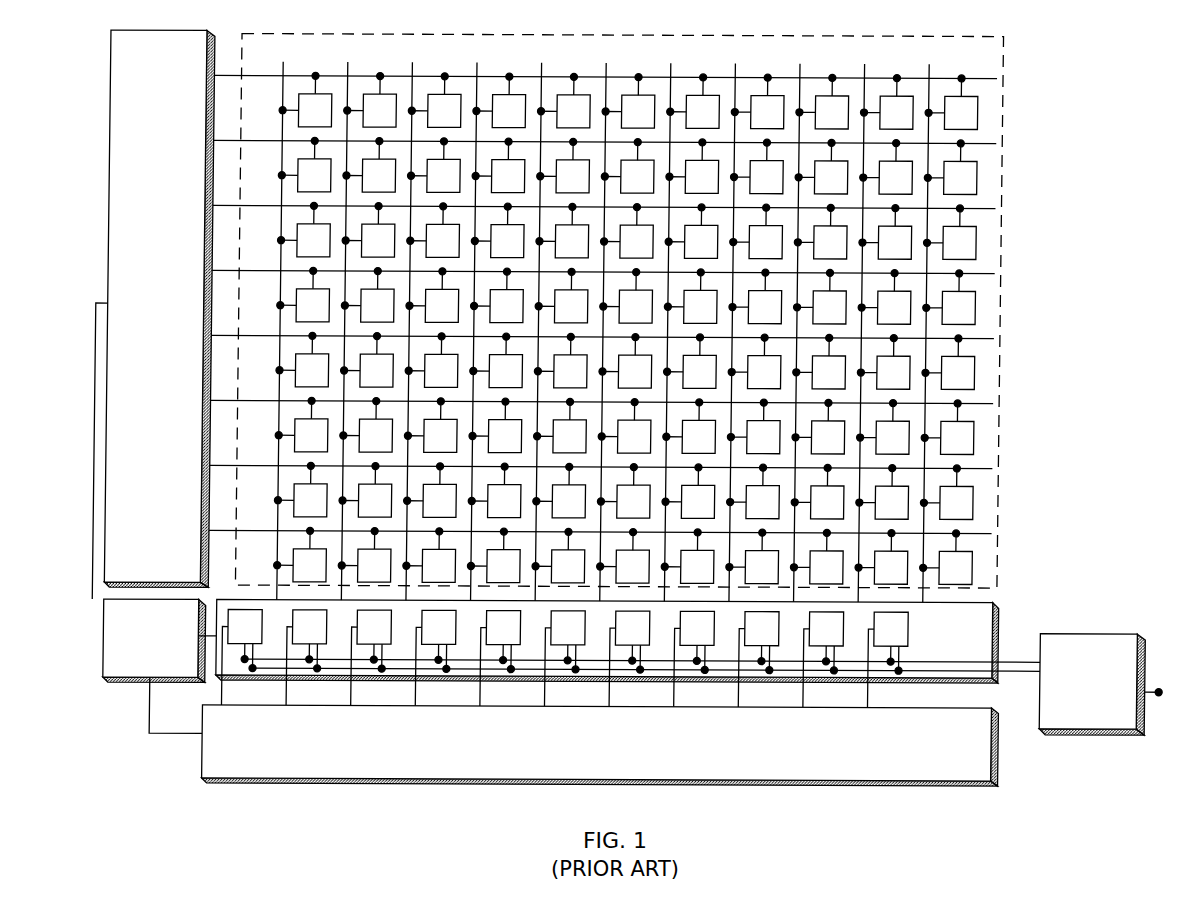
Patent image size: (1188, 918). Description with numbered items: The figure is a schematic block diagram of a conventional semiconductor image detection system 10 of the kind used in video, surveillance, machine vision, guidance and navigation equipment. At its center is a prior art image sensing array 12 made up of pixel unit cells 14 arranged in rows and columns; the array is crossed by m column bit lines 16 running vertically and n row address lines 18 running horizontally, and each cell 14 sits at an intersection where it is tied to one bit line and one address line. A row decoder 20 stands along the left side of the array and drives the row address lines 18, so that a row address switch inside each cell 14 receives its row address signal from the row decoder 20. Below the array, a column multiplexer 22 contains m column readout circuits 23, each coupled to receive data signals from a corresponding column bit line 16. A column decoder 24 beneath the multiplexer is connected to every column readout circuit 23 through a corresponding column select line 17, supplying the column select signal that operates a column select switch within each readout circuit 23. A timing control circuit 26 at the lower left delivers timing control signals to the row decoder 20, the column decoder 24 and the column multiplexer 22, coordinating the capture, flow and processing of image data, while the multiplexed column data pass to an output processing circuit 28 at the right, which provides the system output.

The semiconductor image detection system 10 is at (609, 403).
The image sensing array 12 is at (1017, 86).
The pixel unit cell 14 is at (968, 294).
The column bit line 16 is at (409, 63).
The column select line 17 is at (226, 701).
The row address line 18 is at (979, 468).
The row decoder 20 is at (167, 344).
The column multiplexer 22 is at (1008, 612).
The column readout circuit 23 is at (239, 639).
The column decoder 24 is at (589, 770).
The timing control circuit 26 is at (143, 668).
The output processing circuit 28 is at (1080, 720).